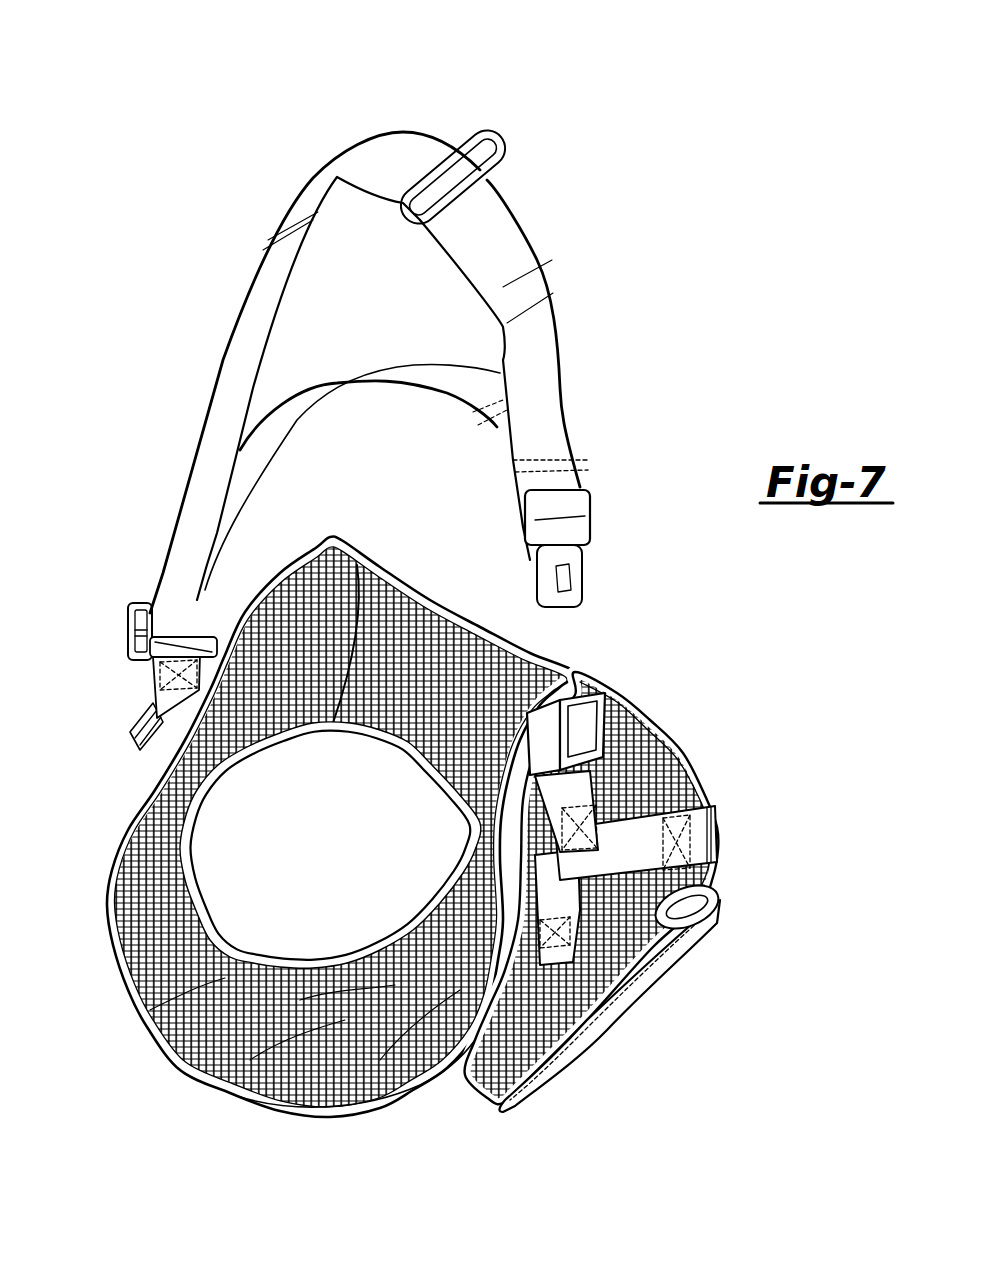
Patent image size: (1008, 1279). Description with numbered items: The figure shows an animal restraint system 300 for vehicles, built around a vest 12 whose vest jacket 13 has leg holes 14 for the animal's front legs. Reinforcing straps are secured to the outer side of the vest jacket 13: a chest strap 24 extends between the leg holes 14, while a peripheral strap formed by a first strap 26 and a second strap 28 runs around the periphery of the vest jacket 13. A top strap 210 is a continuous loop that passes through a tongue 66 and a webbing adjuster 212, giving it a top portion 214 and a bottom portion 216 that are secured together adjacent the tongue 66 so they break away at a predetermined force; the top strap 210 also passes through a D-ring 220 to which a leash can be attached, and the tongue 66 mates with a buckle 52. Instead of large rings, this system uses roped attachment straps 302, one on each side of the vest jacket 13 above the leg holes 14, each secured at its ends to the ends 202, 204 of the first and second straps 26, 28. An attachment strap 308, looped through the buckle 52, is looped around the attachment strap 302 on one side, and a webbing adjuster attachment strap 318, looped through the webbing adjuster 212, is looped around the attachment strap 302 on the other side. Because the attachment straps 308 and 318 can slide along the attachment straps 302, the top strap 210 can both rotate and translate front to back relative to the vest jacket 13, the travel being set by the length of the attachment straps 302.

The vest 12 is at (406, 842).
The vest jacket 13 is at (140, 896).
The leg holes 14 is at (203, 887).
The chest strap 24 is at (265, 1095).
The first strap 26 is at (527, 1003).
The second strap 28 is at (720, 838).
The buckle 52 is at (600, 700).
The tongue 66 is at (593, 572).
The end of first strap 202 is at (587, 967).
The end of second strap 204 is at (692, 836).
The top strap 210 is at (367, 364).
The webbing adjuster 212 is at (128, 622).
The top portion 214 is at (545, 345).
The bottom portion 216 is at (420, 370).
The D-ring 220 is at (490, 128).
The animal restraint system 300 is at (425, 616).
The attachment straps 302 is at (131, 740).
The attachment strap 308 is at (590, 792).
The webbing adjuster attachment strap 318 is at (152, 678).